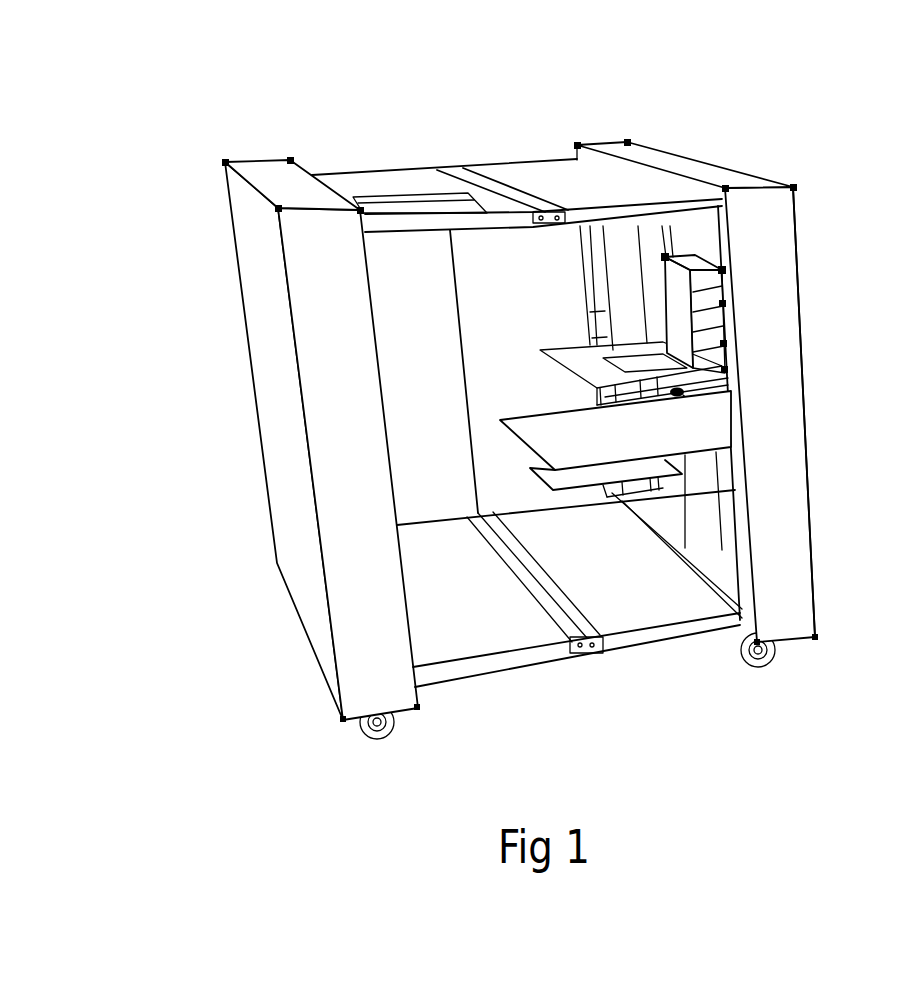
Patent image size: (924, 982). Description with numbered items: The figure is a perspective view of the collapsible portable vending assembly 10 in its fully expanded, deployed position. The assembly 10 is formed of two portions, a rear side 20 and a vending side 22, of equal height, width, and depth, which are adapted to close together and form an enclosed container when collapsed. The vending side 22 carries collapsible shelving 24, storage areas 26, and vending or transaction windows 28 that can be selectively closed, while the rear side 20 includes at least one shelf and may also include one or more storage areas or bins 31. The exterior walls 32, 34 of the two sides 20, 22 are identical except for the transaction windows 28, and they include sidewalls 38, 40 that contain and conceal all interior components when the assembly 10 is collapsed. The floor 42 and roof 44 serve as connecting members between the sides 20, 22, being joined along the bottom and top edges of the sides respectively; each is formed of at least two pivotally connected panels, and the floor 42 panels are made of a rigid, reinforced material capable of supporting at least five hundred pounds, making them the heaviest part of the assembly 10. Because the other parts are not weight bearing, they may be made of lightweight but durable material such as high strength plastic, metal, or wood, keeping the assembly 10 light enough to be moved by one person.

The assembly 10 is at (226, 380).
The rear side 20 is at (340, 557).
The vending side 22 is at (793, 553).
The collapsible shelving 24 is at (550, 432).
The storage areas 26 is at (722, 548).
The transaction windows 28 is at (812, 274).
The storage areas or bins 31 is at (407, 570).
The exterior wall 32 is at (263, 247).
The exterior wall 34 is at (808, 490).
The sidewall 38 is at (330, 448).
The sidewall 40 is at (768, 358).
The floor 42 is at (497, 662).
The roof 44 is at (517, 172).